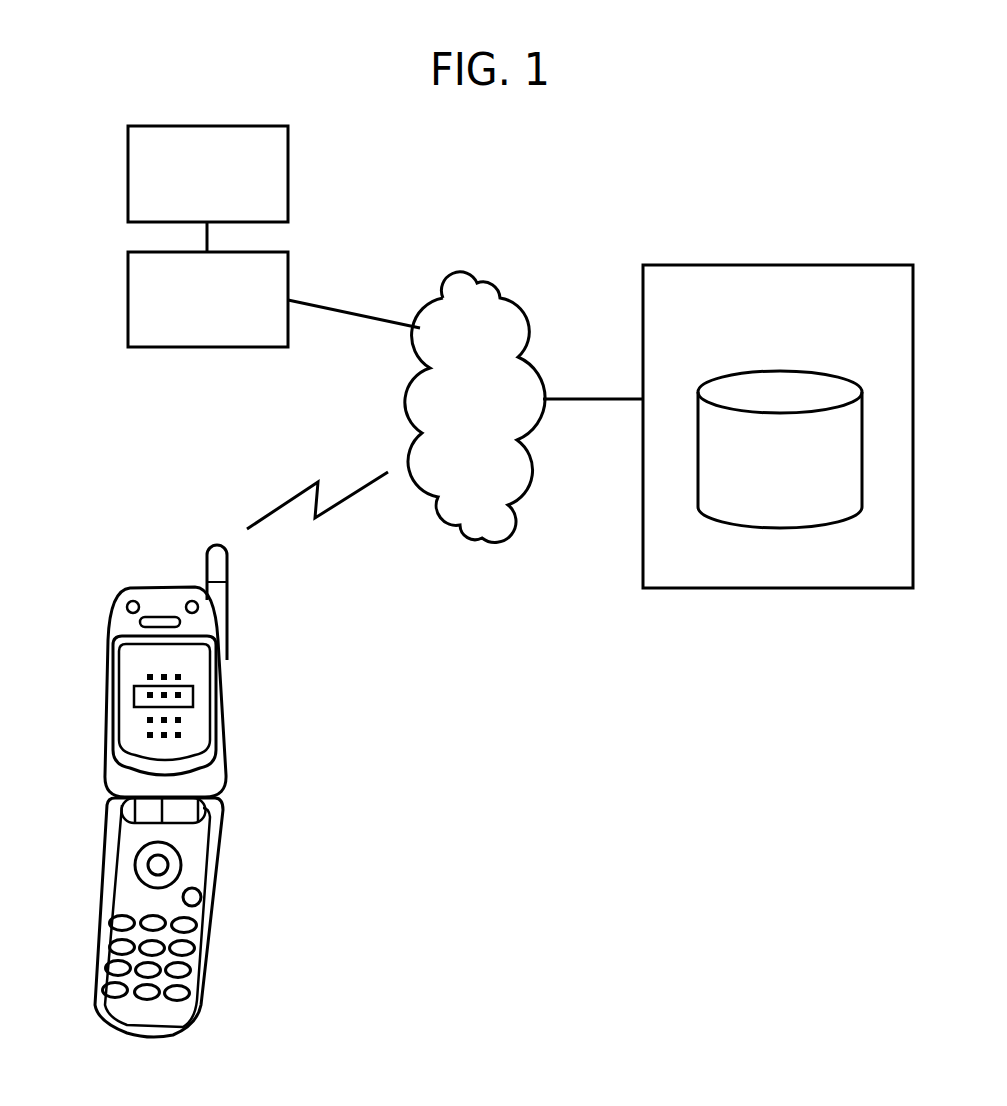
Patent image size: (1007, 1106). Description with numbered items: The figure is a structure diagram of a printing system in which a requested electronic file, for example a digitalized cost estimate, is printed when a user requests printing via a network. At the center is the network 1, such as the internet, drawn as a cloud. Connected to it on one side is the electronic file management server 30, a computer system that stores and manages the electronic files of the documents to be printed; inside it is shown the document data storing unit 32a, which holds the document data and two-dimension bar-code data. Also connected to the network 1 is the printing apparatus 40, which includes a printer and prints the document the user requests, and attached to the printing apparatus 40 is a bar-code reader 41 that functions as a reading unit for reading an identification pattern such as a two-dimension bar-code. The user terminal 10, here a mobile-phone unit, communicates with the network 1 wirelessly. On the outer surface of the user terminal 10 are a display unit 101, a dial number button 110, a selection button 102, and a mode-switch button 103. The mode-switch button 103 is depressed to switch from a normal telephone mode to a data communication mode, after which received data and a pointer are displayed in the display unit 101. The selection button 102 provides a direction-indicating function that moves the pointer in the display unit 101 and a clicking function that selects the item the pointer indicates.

The network 1 is at (488, 256).
The user terminal 10 is at (144, 587).
The electronic file management server 30 is at (878, 264).
The document data storing unit 32a is at (776, 531).
The printing apparatus 40 is at (128, 284).
The bar-code reader 41 is at (128, 159).
The display unit 101 is at (202, 720).
The selection button 102 is at (170, 852).
The mode-switch button 103 is at (198, 896).
The dial number button 110 is at (216, 917).